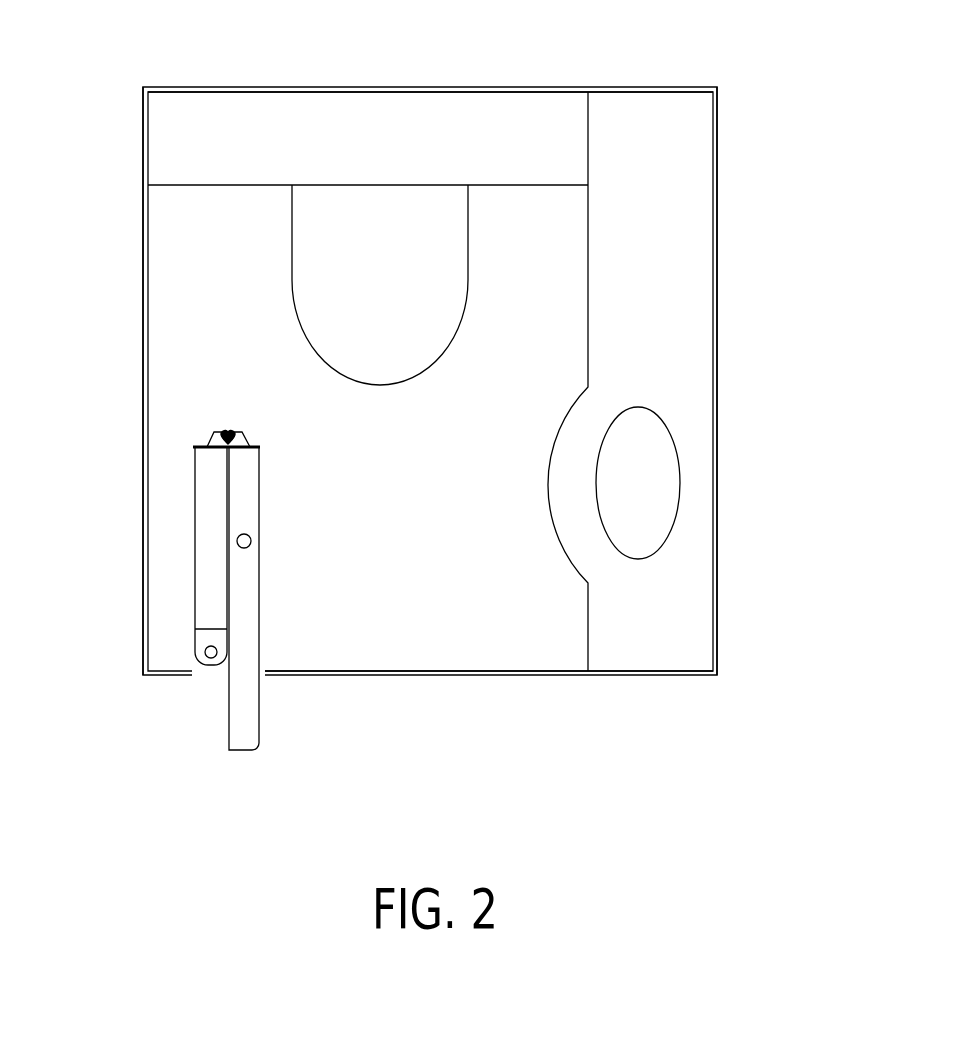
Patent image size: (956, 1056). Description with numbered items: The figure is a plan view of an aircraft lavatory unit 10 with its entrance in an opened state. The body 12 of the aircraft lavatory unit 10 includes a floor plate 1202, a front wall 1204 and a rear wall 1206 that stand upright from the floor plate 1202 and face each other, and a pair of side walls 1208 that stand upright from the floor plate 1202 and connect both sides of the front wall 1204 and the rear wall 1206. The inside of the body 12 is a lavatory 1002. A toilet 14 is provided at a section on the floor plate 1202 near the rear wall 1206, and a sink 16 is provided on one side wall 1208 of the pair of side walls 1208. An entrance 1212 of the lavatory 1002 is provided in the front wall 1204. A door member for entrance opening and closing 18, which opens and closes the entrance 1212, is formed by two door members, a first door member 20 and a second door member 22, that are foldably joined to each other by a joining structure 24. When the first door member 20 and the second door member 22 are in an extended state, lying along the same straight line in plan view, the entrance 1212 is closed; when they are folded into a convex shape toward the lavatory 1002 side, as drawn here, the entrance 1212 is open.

The aircraft lavatory unit 10 is at (555, 40).
The body 12 is at (430, 381).
The toilet 14 is at (380, 385).
The sink 16 is at (685, 402).
The door member for entrance opening and closing 18 is at (181, 607).
The first door member 20 is at (192, 575).
The second door member 22 is at (267, 575).
The joining structure 24 is at (218, 432).
The lavatory 1002 is at (433, 546).
The floor plate 1202 is at (497, 583).
The front wall 1204 is at (658, 675).
The rear wall 1206 is at (302, 86).
The side walls 1208 is at (143, 342).
The entrance 1212 is at (380, 667).